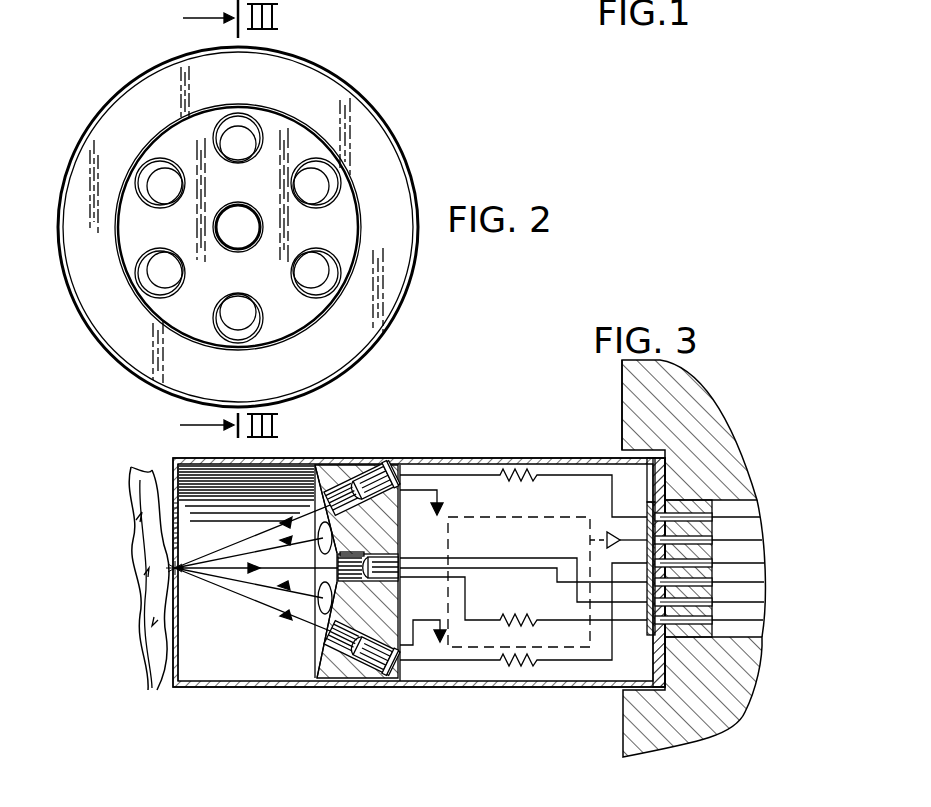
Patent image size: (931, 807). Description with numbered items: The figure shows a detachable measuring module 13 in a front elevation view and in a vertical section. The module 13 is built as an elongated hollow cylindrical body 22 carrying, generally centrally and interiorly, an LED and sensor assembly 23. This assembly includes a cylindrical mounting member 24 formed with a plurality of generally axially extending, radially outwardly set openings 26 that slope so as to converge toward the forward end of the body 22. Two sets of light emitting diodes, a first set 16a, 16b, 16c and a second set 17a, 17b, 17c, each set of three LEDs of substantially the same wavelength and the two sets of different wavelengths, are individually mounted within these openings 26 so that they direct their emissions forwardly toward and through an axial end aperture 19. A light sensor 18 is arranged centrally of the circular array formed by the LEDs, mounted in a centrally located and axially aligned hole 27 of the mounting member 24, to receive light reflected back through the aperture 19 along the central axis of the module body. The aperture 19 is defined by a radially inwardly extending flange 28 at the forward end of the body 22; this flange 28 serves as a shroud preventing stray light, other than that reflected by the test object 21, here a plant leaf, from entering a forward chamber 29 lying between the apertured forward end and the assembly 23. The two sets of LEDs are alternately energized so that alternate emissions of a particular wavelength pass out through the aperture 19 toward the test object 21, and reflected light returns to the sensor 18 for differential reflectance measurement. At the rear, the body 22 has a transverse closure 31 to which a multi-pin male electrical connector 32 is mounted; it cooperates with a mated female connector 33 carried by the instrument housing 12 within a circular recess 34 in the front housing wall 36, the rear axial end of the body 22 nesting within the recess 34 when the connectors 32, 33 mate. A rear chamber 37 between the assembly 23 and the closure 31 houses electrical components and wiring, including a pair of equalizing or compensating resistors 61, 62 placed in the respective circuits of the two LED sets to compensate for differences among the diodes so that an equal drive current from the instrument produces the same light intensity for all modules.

In FIG. 3, the instrument housing 12 is at (730, 400).
In FIG. 2, the module 13 is at (392, 110).
In FIG. 3, the module 13 is at (462, 450).
In FIG. 2, the light emitting diode 16a is at (252, 128).
In FIG. 3, the light emitting diode 16a is at (378, 482).
In FIG. 2, the light emitting diode 16b is at (328, 282).
In FIG. 2, the light emitting diode 16c is at (147, 280).
In FIG. 2, the light emitting diode 17a is at (155, 164).
In FIG. 2, the light emitting diode 17b is at (337, 176).
In FIG. 2, the light emitting diode 17c is at (230, 335).
In FIG. 3, the light emitting diode 17c is at (375, 660).
In FIG. 2, the light sensor 18 is at (240, 205).
In FIG. 3, the light sensor 18 is at (396, 579).
In FIG. 2, the axial end aperture 19 is at (350, 246).
In FIG. 3, the axial end aperture 19 is at (178, 630).
In FIG. 3, the test object 21 is at (132, 603).
In FIG. 2, the cylindrical body 22 is at (412, 300).
In FIG. 3, the cylindrical body 22 is at (528, 457).
In FIG. 2, the LED and sensor assembly 23 is at (318, 224).
In FIG. 3, the LED and sensor assembly 23 is at (418, 628).
In FIG. 2, the cylindrical mounting member 24 is at (141, 231).
In FIG. 3, the cylindrical mounting member 24 is at (344, 468).
In FIG. 3, the openings 26 is at (322, 556).
In FIG. 3, the hole 27 is at (365, 552).
In FIG. 2, the flange 28 is at (318, 358).
In FIG. 3, the flange 28 is at (176, 482).
In FIG. 3, the forward chamber 29 is at (231, 621).
In FIG. 3, the transverse closure 31 is at (657, 655).
In FIG. 3, the male connector 32 is at (642, 502).
In FIG. 3, the female connector 33 is at (716, 488).
In FIG. 3, the circular recess 34 is at (648, 457).
In FIG. 3, the front housing wall 36 is at (621, 389).
In FIG. 3, the rear chamber 37 is at (584, 504).
In FIG. 3, the compensating resistor 61 is at (535, 476).
In FIG. 3, the compensating resistor 62 is at (540, 655).